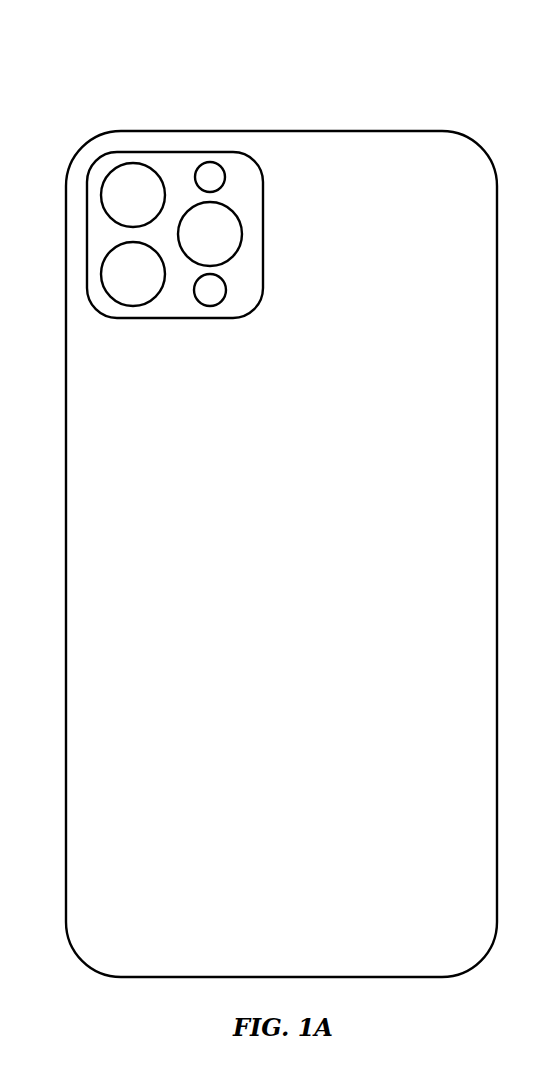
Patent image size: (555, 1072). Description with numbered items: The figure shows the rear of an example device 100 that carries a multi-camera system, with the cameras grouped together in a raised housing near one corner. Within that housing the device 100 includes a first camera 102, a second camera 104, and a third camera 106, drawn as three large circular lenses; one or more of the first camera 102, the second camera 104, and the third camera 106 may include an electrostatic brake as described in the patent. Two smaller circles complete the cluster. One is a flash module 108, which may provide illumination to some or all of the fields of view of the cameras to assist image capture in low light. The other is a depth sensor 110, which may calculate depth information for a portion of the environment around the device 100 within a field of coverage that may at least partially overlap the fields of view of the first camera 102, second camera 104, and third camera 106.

The device 100 is at (471, 67).
The first camera 102 is at (105, 258).
The second camera 104 is at (105, 179).
The third camera 106 is at (187, 211).
The flash module 108 is at (217, 163).
The depth sensor 110 is at (210, 307).